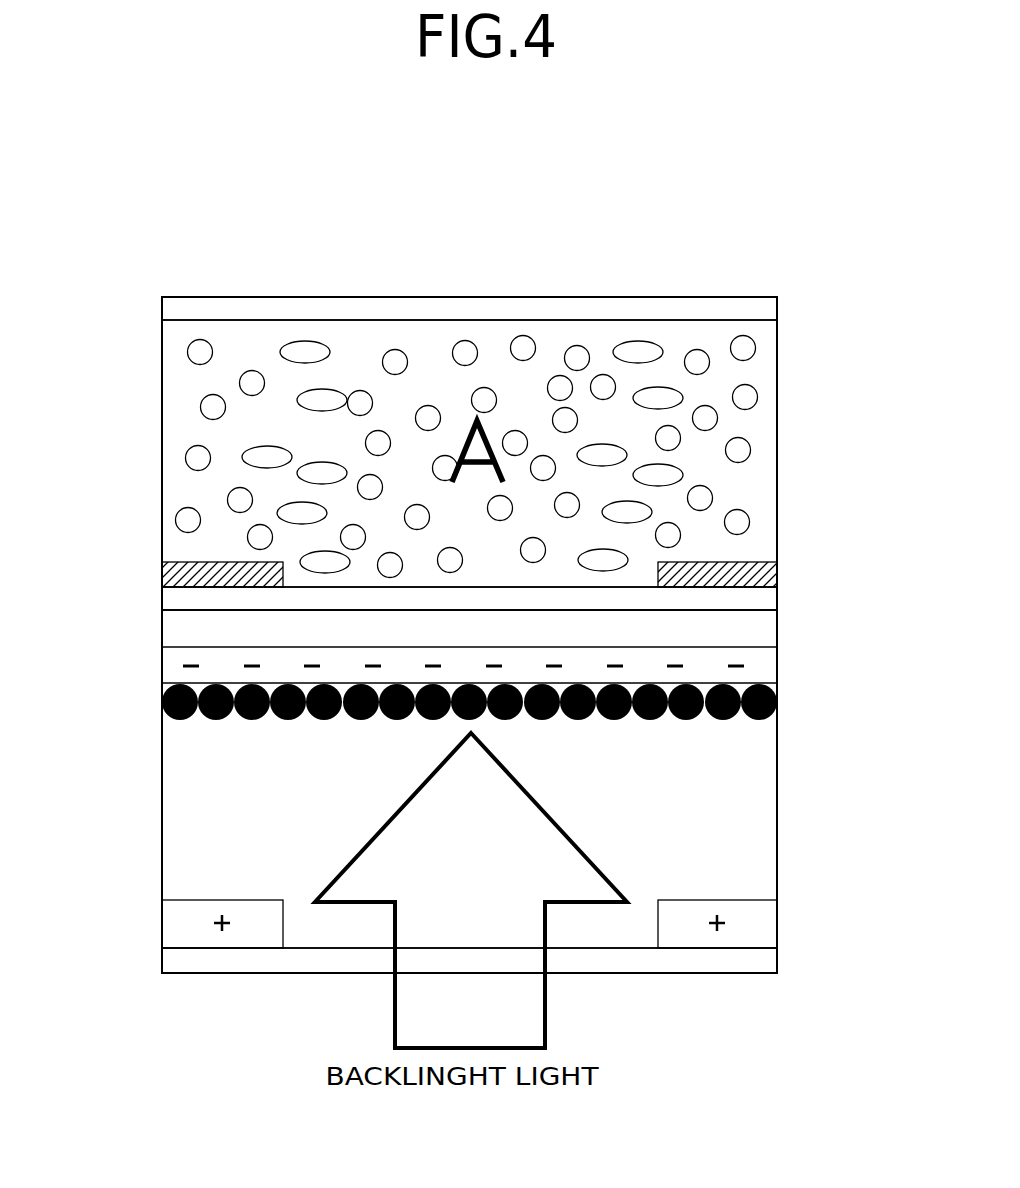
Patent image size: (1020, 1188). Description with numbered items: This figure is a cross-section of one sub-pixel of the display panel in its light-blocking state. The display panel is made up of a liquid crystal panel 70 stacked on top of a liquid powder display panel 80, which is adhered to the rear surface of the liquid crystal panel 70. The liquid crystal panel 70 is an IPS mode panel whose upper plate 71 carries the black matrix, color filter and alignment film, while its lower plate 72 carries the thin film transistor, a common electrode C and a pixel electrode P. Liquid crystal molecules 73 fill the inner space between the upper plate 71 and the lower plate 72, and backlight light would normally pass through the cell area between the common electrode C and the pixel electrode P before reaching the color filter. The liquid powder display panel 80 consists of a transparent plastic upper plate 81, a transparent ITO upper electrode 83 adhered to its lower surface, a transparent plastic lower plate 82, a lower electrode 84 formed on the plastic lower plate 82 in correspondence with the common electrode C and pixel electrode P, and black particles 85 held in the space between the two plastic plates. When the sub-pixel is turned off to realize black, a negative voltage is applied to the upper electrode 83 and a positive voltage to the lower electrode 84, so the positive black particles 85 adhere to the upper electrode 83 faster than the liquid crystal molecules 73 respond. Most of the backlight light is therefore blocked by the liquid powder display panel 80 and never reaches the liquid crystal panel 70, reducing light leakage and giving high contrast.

The liquid crystal panel 70 is at (135, 299).
The upper plate 71 is at (760, 308).
The lower plate 72 is at (810, 563).
The liquid crystal molecules 73 is at (750, 440).
The pixel electrode P is at (165, 575).
The common electrode C is at (752, 566).
The liquid powder display panel 80 is at (137, 613).
The plastic upper plate 81 is at (760, 630).
The plastic lower plate 82 is at (757, 962).
The upper electrode 83 is at (760, 665).
The lower electrode 84 is at (780, 922).
The black particles 85 is at (776, 700).